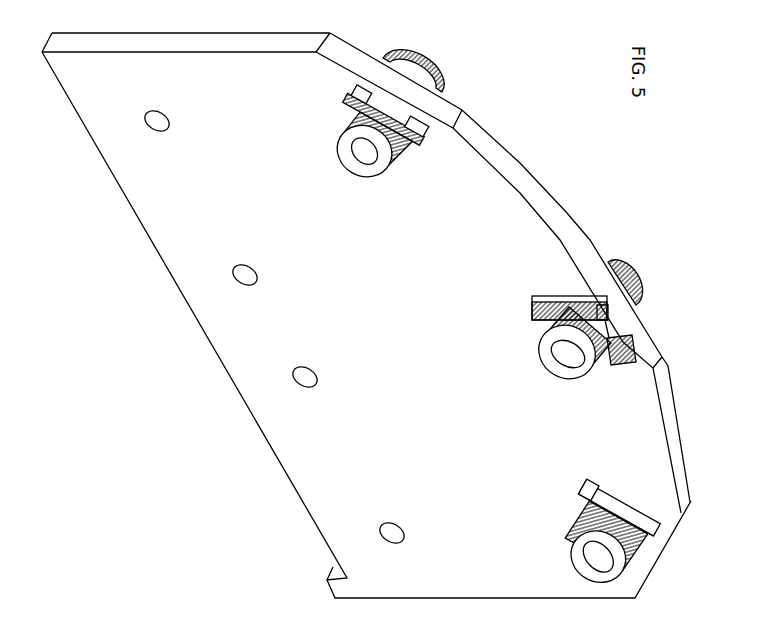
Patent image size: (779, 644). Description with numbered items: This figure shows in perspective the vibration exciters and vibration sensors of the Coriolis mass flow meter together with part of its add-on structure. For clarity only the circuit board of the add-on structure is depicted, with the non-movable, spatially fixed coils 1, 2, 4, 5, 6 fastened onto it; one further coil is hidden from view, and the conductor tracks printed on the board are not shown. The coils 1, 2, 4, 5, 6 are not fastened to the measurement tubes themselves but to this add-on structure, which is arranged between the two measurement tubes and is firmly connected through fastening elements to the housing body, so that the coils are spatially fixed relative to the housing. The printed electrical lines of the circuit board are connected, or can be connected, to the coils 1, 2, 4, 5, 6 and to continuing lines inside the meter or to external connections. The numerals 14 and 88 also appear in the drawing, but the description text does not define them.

The coil 1 is at (199, 391).
The coil 2 is at (642, 283).
The coil 4 is at (423, 133).
The coil 5 is at (667, 365).
The coil 6 is at (633, 545).
The roller 14 is at (420, 62).
The mounting plate 88 is at (338, 435).